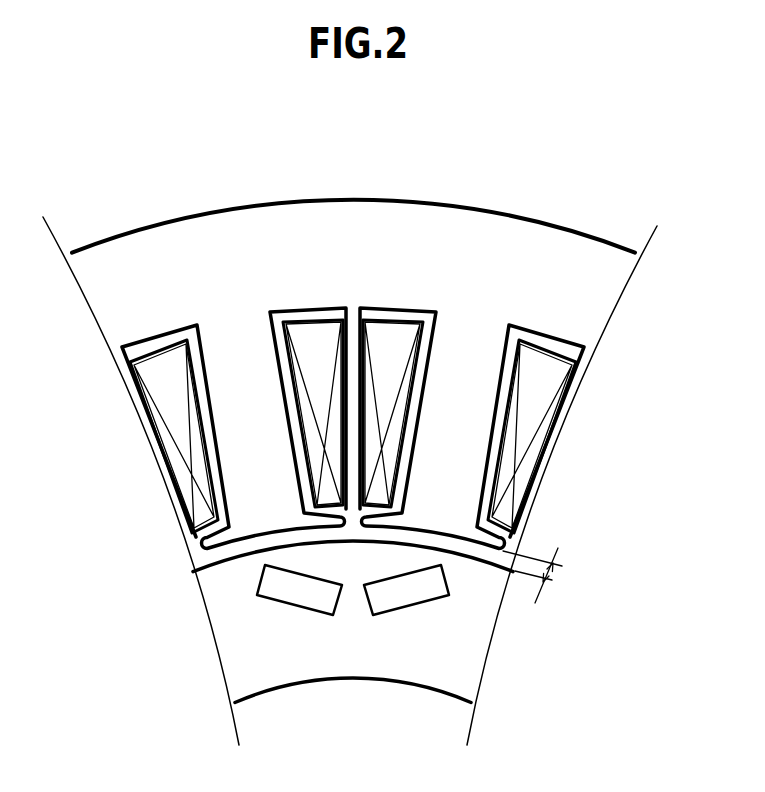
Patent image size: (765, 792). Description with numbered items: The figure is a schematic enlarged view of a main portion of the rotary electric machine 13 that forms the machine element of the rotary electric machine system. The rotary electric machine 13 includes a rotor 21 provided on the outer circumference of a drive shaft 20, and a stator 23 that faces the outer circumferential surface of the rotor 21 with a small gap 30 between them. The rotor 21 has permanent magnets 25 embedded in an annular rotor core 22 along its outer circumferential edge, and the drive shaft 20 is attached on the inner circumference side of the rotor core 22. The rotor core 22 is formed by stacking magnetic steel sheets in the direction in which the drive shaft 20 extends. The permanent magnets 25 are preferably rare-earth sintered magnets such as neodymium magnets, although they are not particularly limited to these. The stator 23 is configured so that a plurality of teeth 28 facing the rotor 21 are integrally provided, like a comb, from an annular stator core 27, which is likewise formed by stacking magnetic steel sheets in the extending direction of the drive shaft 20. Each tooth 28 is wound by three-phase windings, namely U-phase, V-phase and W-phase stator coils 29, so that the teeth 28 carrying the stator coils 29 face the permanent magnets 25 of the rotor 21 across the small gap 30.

The rotary electric machine 13 is at (568, 178).
The drive shaft 20 is at (274, 688).
The rotor 21 is at (502, 632).
The rotor core 22 is at (242, 612).
The stator 23 is at (618, 302).
The permanent magnets 25 is at (295, 597).
The stator core 27 is at (352, 223).
The teeth 28 is at (264, 429).
The stator coils 29 is at (312, 335).
The gap 30 is at (553, 581).